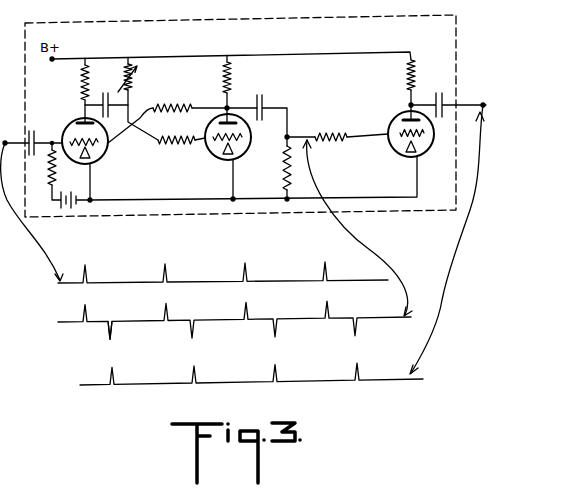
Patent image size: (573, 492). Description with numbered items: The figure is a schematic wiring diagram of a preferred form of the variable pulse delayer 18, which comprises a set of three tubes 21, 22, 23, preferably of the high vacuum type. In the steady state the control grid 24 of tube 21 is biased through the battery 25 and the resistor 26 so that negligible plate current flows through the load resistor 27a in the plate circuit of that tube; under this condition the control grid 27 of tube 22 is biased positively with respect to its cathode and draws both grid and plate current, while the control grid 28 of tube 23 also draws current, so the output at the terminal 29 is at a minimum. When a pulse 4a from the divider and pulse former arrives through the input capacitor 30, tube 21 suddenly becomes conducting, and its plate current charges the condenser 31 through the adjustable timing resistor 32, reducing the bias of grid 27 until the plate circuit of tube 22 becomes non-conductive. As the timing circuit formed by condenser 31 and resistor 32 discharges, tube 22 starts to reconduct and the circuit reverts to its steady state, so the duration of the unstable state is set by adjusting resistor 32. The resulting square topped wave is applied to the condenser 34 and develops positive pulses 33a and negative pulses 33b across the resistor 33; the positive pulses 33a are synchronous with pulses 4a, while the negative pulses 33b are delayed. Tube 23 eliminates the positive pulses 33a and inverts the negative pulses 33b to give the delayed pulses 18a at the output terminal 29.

The variable pulse delayer 18 is at (456, 32).
The output terminal 29 is at (483, 104).
The condenser 31 is at (104, 93).
The load resistor 27a is at (82, 77).
The adjustable timing resistor 32 is at (133, 88).
The condenser 34 is at (259, 94).
The input capacitor 30 is at (34, 128).
The control grid 28 is at (400, 133).
The control grid 27 is at (240, 137).
The resistor 26 is at (48, 168).
The control grid 24 is at (98, 143).
The tube 21 is at (101, 158).
The tube 22 is at (243, 150).
The tube 23 is at (396, 153).
The resistor 33 is at (284, 177).
The battery 25 is at (70, 215).
The pulse 4a is at (163, 273).
The positive pulses 33a is at (87, 310).
The negative pulses 33b is at (113, 333).
The delayed pulses 18a is at (193, 377).